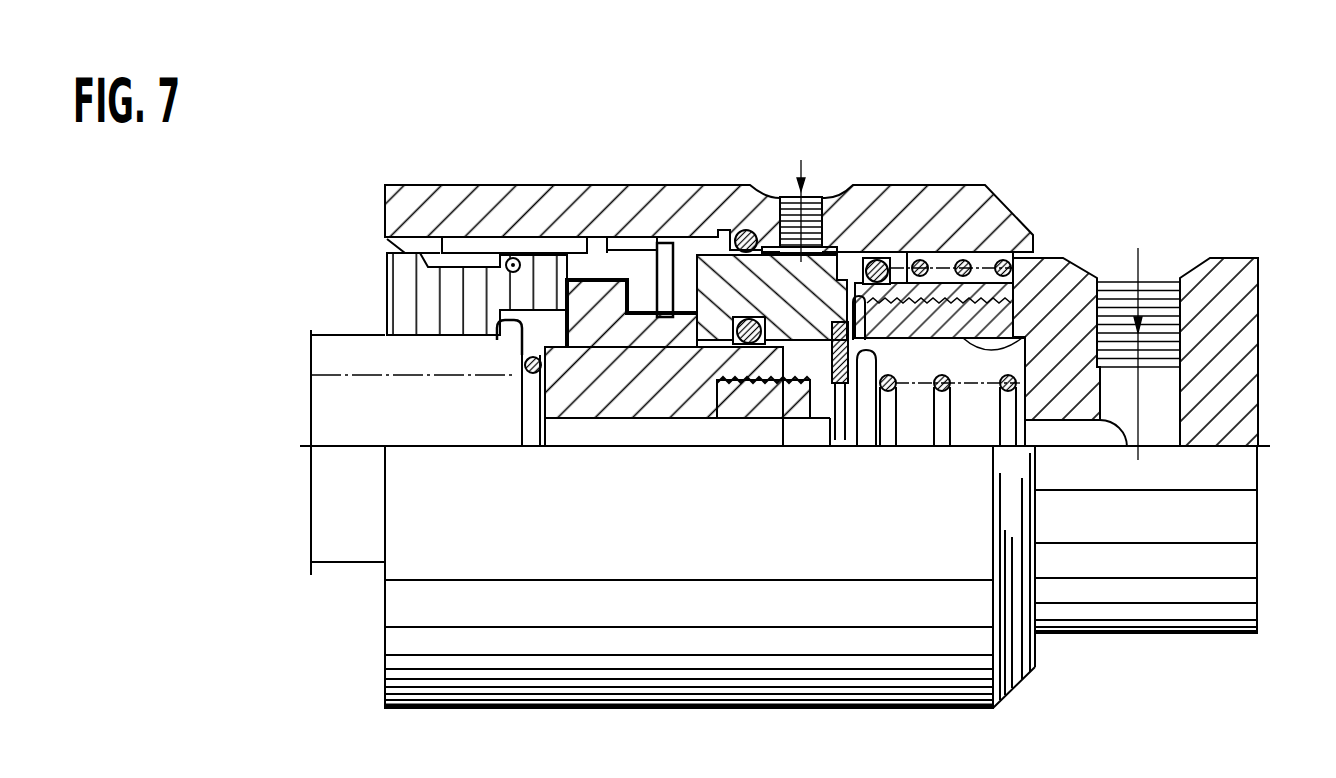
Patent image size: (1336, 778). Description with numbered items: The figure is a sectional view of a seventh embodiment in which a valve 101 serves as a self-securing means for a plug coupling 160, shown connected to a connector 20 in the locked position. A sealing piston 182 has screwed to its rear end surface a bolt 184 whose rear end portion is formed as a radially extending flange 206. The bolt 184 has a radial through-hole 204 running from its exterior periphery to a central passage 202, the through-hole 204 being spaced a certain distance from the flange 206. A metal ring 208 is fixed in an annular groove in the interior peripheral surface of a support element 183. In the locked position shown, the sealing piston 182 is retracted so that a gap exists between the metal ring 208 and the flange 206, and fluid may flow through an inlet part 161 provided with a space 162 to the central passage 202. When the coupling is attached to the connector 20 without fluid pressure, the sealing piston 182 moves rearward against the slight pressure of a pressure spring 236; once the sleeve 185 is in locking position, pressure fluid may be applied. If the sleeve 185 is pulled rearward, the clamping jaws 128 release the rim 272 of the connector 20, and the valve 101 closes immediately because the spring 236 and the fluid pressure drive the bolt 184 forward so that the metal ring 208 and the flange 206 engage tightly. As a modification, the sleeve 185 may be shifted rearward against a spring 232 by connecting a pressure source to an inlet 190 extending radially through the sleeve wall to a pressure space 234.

The connector 20 is at (337, 540).
The valve 101 is at (887, 455).
The clamping jaws 128 is at (400, 278).
The plug coupling 160 is at (373, 194).
The inlet part 161 is at (1045, 275).
The space 162 is at (1087, 278).
The sealing piston 182 is at (602, 382).
The support element 183 is at (817, 277).
The bolt 184 is at (762, 400).
The sleeve 185 is at (507, 197).
The inlet 190 is at (770, 217).
The central passage 202 is at (641, 428).
The radial through-hole 204 is at (833, 386).
The flange 206 is at (860, 418).
The metal ring 208 is at (828, 383).
The spring 232 is at (965, 254).
The pressure space 234 is at (877, 257).
The pressure spring 236 is at (996, 392).
The rim 272 is at (507, 336).